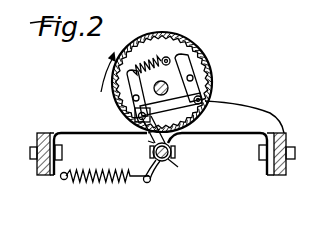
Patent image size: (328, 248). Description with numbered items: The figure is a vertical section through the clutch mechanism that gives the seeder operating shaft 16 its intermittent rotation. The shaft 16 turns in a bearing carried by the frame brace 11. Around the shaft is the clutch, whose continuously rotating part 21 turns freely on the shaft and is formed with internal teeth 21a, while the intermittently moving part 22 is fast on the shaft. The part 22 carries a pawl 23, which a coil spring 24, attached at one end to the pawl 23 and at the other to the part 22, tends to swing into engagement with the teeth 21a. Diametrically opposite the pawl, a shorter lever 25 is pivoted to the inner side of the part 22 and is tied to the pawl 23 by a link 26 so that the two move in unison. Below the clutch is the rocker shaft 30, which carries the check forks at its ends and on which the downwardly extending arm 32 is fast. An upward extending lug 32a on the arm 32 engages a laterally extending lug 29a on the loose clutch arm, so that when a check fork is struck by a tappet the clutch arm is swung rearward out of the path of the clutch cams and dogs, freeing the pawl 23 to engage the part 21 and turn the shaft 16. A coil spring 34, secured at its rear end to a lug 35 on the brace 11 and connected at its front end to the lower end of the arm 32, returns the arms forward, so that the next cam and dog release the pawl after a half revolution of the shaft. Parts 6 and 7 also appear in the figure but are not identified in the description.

The right support block 6 is at (287, 168).
The left support block 7 is at (37, 172).
The frame brace 11 is at (262, 123).
The seeder operating shaft 16 is at (153, 88).
The continuously rotating clutch part 21 is at (203, 52).
The internal teeth 21a is at (213, 94).
The intermittently moving clutch part 22 is at (215, 72).
The pawl 23 is at (132, 90).
The coil spring 24 is at (152, 62).
The lever 25 is at (214, 58).
The link 26 is at (214, 112).
The laterally extending lug 29a is at (150, 142).
The rocker shaft 30 is at (170, 158).
The downwardly extending arm 32 is at (158, 183).
The upward extending lug 32a is at (172, 145).
The coil spring 34 is at (105, 181).
The lug 35 is at (64, 178).